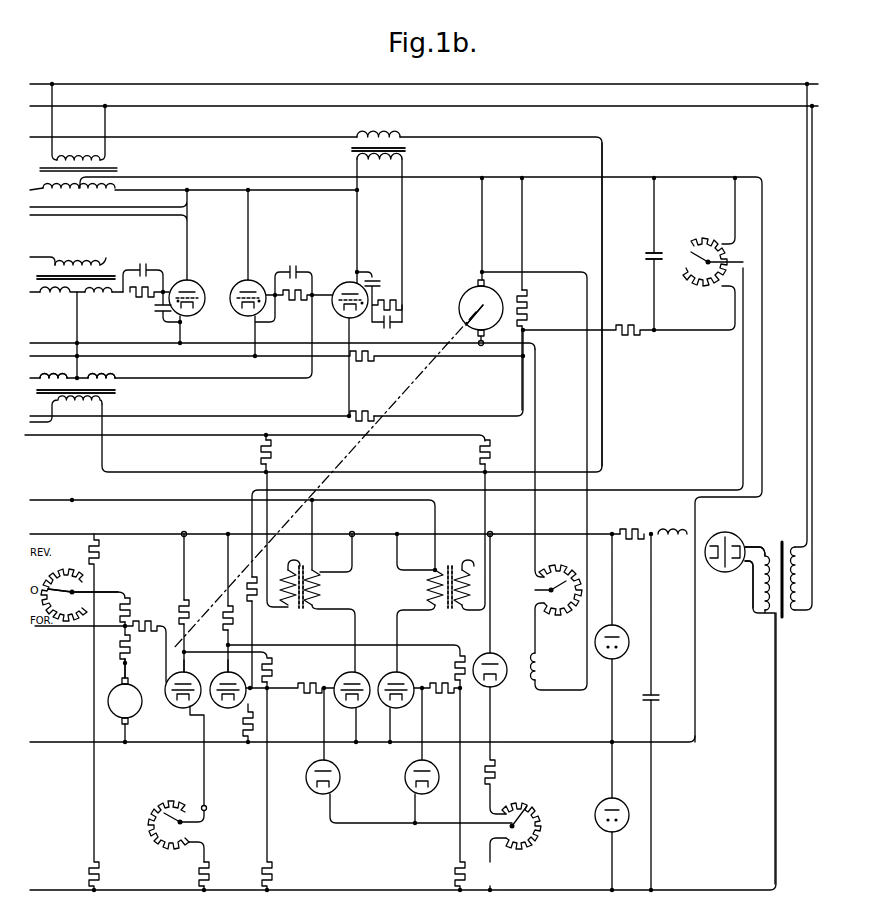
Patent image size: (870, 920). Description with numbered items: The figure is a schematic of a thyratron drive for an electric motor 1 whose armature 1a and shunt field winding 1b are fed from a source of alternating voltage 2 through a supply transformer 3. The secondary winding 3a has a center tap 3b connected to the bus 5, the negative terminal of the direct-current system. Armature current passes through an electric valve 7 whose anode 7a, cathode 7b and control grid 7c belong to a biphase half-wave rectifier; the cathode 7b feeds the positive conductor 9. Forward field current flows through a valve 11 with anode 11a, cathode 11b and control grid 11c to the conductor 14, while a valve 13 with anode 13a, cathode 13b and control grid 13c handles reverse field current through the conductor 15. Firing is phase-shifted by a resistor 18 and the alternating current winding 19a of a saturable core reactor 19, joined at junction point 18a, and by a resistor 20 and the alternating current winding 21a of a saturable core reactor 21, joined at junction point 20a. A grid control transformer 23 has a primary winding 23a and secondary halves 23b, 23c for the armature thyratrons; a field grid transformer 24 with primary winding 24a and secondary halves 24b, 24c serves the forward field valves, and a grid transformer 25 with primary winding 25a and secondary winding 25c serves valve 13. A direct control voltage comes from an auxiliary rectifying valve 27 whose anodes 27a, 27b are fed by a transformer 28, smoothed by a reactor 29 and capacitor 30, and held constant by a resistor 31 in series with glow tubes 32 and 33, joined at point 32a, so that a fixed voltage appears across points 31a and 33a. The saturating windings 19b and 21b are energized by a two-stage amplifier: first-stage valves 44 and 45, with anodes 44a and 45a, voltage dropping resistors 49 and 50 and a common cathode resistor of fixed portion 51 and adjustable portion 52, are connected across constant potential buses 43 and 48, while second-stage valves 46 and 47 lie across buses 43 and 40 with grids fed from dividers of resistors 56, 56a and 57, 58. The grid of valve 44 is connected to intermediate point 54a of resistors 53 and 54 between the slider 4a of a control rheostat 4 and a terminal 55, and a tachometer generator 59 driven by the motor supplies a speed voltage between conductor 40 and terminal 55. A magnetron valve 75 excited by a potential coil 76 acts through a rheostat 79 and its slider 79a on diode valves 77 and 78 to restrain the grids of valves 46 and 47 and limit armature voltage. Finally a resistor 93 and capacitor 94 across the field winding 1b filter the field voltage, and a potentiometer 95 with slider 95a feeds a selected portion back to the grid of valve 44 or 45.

The electric motor 1 is at (464, 275).
The armature 1a is at (459, 308).
The shunt field winding 1b is at (533, 308).
The source of alternating voltage 2 is at (192, 106).
The supply transformer 3 is at (42, 170).
The secondary winding 3a is at (114, 190).
The center tap 3b is at (74, 197).
The control rheostat 4 is at (64, 595).
The slider 4a is at (83, 583).
The bus 5 is at (263, 177).
The electric valve 7 is at (195, 283).
The anode 7a is at (181, 283).
The cathode 7b is at (192, 312).
The control grid 7c is at (202, 300).
The conductor 9 is at (288, 340).
The electric valve 11 is at (243, 283).
The anode 11a is at (254, 283).
The cathode 11b is at (246, 312).
The control grid 11c is at (236, 296).
The electric valve 13 is at (350, 318).
The anode 13a is at (346, 316).
The cathode 13b is at (348, 285).
The control grid 13c is at (340, 296).
The conductor 14 is at (288, 361).
The conductor 15 is at (481, 416).
The resistor 18 is at (272, 447).
The junction point 18a is at (270, 472).
The saturable core type reactor 19 is at (312, 554).
The alternating current winding 19a is at (288, 568).
The saturating winding 19b is at (322, 588).
The resistor 20 is at (480, 450).
The junction point 20a is at (480, 474).
The saturable core type reactor 21 is at (454, 554).
The alternating current winding 21a is at (466, 566).
The saturating winding 21b is at (430, 588).
The grid control transformer 23 is at (80, 268).
The primary winding 23a is at (87, 259).
The secondary winding half 23b is at (62, 301).
The secondary winding half 23c is at (98, 301).
The field grid transformer 24 is at (116, 392).
The primary winding 24a is at (104, 403).
The secondary winding half 24b is at (53, 369).
The secondary winding half 24c is at (102, 369).
The grid transformer 25 is at (356, 149).
The primary winding 25a is at (399, 137).
The secondary winding 25c is at (402, 159).
The auxiliary biphase half-wave rectifying valve 27 is at (716, 540).
The anode 27a is at (742, 542).
The anode 27b is at (746, 566).
The transformer 28 is at (782, 542).
The smoothing reactor 29 is at (670, 530).
The capacitor 30 is at (660, 698).
The resistor 31 is at (628, 540).
The point 31a is at (612, 534).
The glow tube 32 is at (620, 632).
The conductor 32a is at (614, 742).
The glow tube 33 is at (620, 806).
The point 33a is at (614, 890).
The conductor 40 is at (158, 742).
The constant potential bus 43 is at (138, 535).
The valve 44 is at (173, 704).
The anode 44a is at (195, 667).
The valve 45 is at (232, 707).
The anode 45a is at (224, 674).
The valve 46 is at (348, 710).
The valve 47 is at (396, 712).
The constant potential bus 48 is at (138, 890).
The voltage dropping resistor 49 is at (186, 608).
The voltage dropping resistor 50 is at (232, 616).
The fixed resistance portion 51 is at (212, 872).
The adjustable resistance portion 52 is at (168, 825).
The resistor 53 is at (122, 652).
The resistor 54 is at (132, 612).
The intermediate point 54a is at (138, 630).
The terminal 55 is at (128, 664).
The resistor 56 is at (274, 667).
The resistor 56a is at (274, 872).
The resistor 57 is at (455, 667).
The resistor 58 is at (455, 872).
The tachometer generator 59 is at (116, 718).
The electric valve of the magnetron type 75 is at (498, 688).
The potential coil 76 is at (540, 668).
The diode control valve 77 is at (338, 772).
The diode control valve 78 is at (406, 772).
The rheostat 79 is at (521, 826).
The slider 79a is at (528, 806).
The resistor 93 is at (629, 336).
The capacitor 94 is at (645, 257).
The potentiometer 95 is at (703, 239).
The slider 95a is at (716, 262).